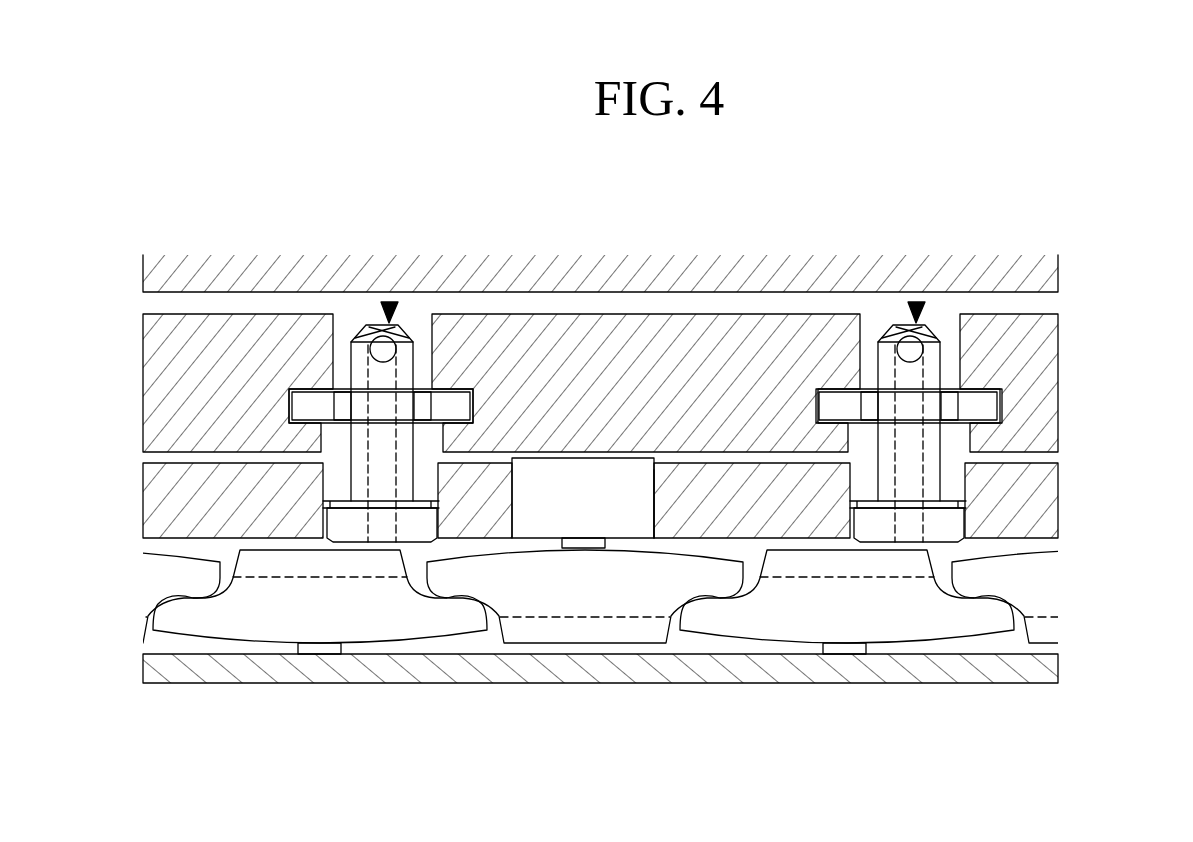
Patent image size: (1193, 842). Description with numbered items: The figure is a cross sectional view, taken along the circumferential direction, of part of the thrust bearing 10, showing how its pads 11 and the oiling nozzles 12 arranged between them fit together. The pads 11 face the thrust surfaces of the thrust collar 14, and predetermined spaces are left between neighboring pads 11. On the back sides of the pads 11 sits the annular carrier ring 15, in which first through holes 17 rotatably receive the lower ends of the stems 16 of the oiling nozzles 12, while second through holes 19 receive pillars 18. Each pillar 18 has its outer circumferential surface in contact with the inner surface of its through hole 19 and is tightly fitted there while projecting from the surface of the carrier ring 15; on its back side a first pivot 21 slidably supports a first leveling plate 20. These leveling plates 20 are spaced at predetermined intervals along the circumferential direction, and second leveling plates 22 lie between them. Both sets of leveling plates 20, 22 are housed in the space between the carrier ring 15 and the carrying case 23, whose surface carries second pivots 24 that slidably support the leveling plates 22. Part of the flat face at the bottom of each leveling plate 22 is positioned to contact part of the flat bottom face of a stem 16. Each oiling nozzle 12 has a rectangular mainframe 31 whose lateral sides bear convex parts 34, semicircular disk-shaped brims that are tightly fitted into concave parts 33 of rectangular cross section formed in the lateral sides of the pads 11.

The thrust bearing 10 is at (1120, 210).
The pad 11 is at (206, 330).
The oiling nozzle 12 is at (390, 302).
The thrust collar 14 is at (1050, 272).
The carrier ring 15 is at (1050, 497).
The stem 16 is at (378, 528).
The through hole 17 is at (433, 506).
The pillar 18 is at (580, 480).
The through hole 19 is at (653, 508).
The leveling plate 20 is at (582, 634).
The pivot 21 is at (583, 542).
The leveling plate 22 is at (222, 623).
The carrying case 23 is at (1022, 672).
The pivot 24 is at (330, 654).
The mainframe 31 is at (358, 350).
The concave part 33 is at (300, 396).
The convex part 34 is at (341, 403).